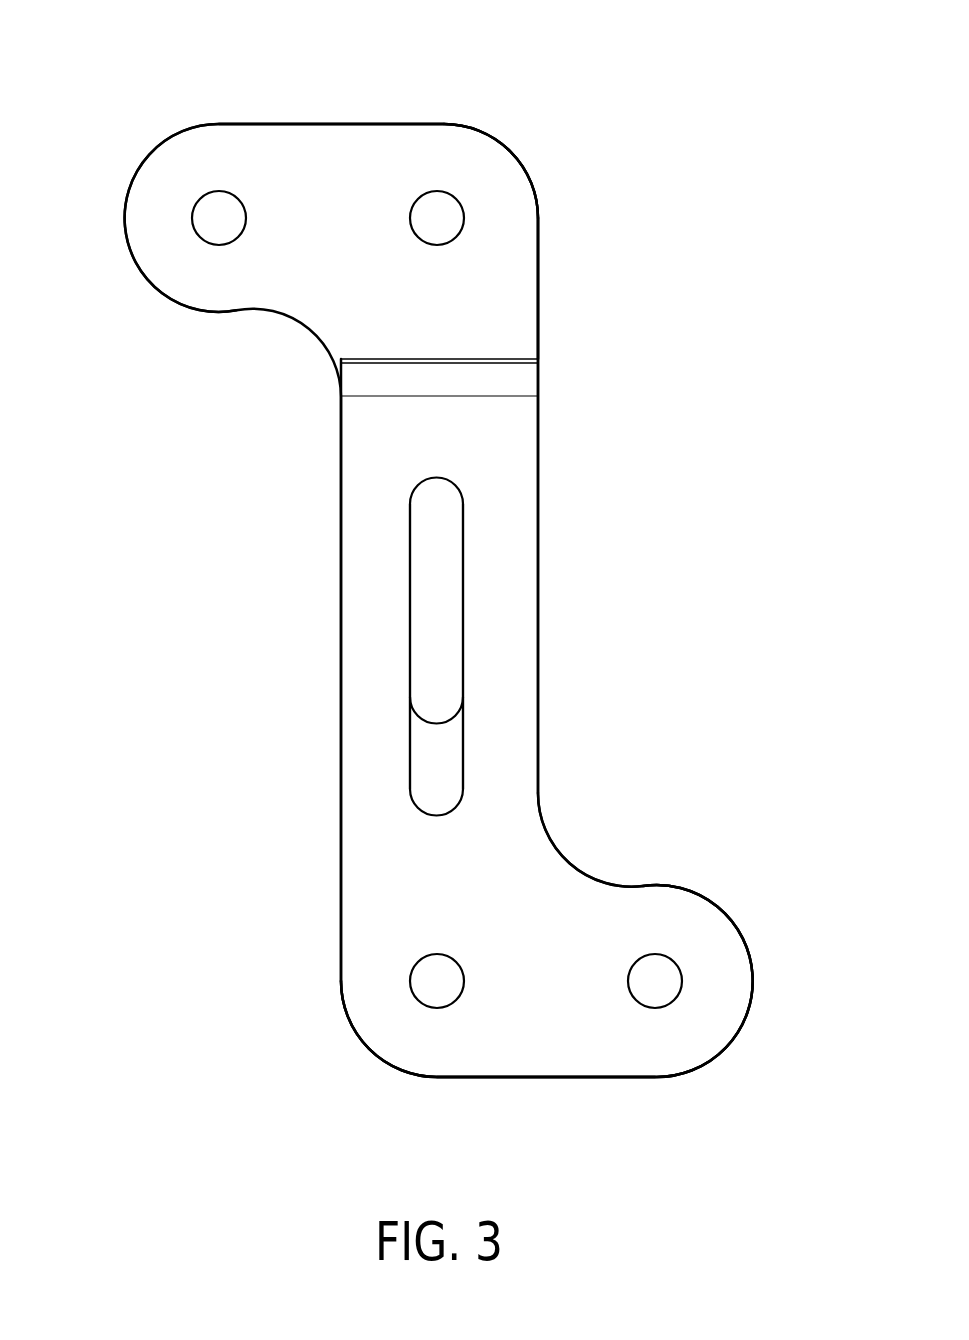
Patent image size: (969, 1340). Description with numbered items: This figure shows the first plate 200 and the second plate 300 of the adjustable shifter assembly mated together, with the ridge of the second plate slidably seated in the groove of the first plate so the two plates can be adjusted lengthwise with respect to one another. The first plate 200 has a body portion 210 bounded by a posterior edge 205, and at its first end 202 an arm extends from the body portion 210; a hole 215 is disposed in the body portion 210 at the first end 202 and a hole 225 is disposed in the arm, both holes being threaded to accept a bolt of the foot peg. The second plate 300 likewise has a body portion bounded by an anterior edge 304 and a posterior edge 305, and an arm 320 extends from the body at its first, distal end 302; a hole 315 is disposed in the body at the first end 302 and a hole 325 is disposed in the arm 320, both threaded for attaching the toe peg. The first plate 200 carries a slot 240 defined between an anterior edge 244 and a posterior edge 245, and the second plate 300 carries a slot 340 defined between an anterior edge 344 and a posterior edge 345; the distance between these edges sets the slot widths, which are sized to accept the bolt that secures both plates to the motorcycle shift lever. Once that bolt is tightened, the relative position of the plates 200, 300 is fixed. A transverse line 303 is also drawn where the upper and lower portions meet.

The first plate 200 is at (192, 153).
The first end 202 is at (383, 122).
The posterior edge 205 is at (537, 197).
The body portion 210 is at (497, 321).
The hole 215 is at (457, 198).
The hole 225 is at (243, 203).
The bend line 303 is at (440, 363).
The anterior edge 304 is at (362, 688).
The posterior edge 305 is at (539, 652).
The slot 240 is at (437, 723).
The anterior edge 244 is at (410, 633).
The posterior edge 245 is at (465, 570).
The slot 340 is at (413, 803).
The anterior edge 344 is at (410, 718).
The posterior edge 345 is at (463, 773).
The second plate 300 is at (572, 925).
The first end 302 is at (507, 1080).
The arm 320 is at (620, 1045).
The hole 315 is at (411, 988).
The hole 325 is at (658, 1008).